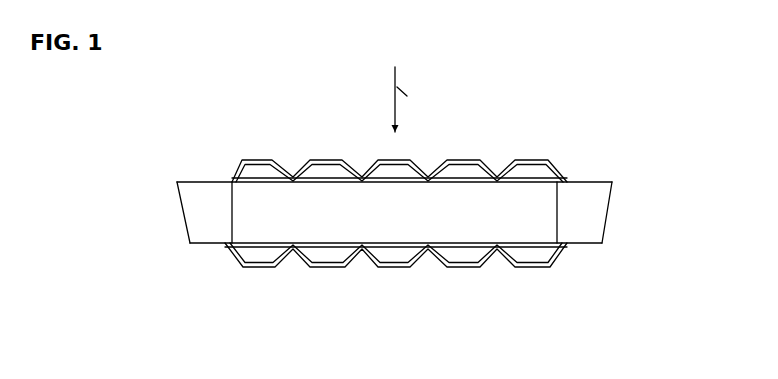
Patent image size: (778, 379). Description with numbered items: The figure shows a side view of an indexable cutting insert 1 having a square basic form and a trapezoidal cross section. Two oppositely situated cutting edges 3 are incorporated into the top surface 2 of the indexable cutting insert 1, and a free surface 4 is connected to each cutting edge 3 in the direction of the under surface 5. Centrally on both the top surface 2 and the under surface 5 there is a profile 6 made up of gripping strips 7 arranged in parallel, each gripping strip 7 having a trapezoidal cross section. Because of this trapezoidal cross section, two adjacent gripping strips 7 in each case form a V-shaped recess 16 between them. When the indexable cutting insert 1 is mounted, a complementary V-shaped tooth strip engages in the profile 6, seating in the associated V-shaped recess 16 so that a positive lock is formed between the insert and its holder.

The indexable cutting insert 1 is at (392, 197).
The top surface 2 is at (192, 180).
The cutting edge 3 is at (177, 182).
The free surface 4 is at (186, 226).
The under surface 5 is at (205, 252).
The profile 6 is at (454, 160).
The gripping strip 7 is at (253, 160).
The V-shaped recess 16 is at (297, 162).